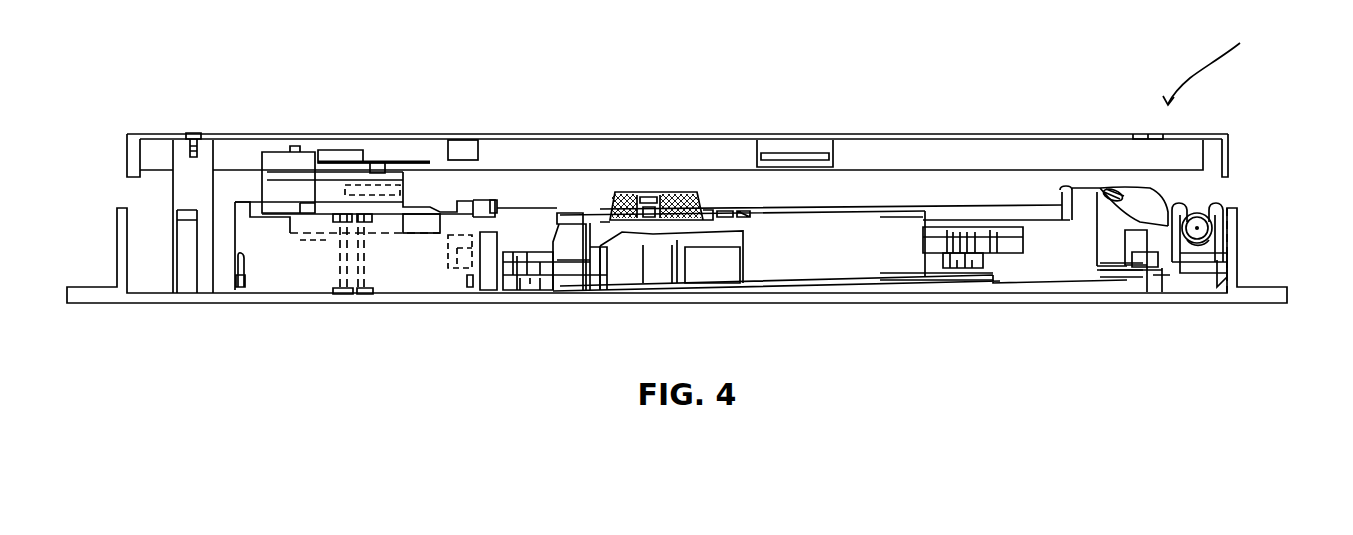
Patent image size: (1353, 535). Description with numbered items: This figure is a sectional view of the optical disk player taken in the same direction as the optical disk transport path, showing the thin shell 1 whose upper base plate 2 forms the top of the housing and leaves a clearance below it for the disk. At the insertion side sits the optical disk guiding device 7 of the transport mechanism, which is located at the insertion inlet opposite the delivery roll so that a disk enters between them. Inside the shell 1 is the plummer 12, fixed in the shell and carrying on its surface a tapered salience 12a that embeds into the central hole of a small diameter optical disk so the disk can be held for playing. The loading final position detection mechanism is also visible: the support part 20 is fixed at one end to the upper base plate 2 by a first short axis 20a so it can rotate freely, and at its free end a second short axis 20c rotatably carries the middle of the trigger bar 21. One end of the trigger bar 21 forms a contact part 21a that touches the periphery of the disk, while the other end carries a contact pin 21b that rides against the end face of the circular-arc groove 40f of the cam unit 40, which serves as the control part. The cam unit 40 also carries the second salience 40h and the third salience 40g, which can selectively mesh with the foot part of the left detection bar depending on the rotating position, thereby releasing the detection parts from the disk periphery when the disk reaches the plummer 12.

The shell 1 is at (1210, 57).
The upper base plate 2 is at (1062, 134).
The optical disk guiding device 7 is at (977, 170).
The plummer 12 is at (740, 210).
The tapered salience 12a is at (706, 205).
The support part 20 is at (397, 138).
The first short axis 20a is at (467, 140).
The second short axis 20c is at (292, 145).
The trigger bar 21 is at (350, 220).
The contact part 21a is at (432, 216).
The contact pin 21b is at (340, 297).
The cam unit 40 is at (393, 208).
The circular-arc groove 40f is at (311, 242).
The third salience 40g is at (346, 192).
The second salience 40h is at (492, 212).